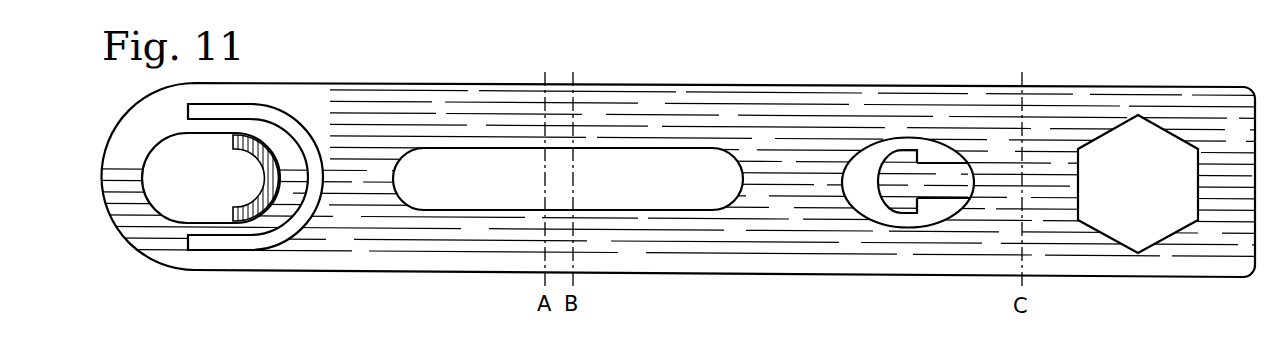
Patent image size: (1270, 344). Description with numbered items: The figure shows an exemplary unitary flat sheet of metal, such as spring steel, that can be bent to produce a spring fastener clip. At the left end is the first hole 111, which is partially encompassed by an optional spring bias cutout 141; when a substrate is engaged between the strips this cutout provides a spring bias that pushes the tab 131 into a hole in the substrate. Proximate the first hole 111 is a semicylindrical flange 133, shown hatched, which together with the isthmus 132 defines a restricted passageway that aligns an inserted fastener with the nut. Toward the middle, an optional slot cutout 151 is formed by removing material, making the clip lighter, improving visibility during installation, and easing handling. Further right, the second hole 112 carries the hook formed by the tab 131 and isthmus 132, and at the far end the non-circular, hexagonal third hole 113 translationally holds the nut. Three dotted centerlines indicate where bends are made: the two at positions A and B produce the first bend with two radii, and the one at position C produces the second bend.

The first hole 111 is at (156, 155).
The second hole 112 is at (858, 211).
The third hole 113 is at (1192, 201).
The tab 131 is at (893, 203).
The isthmus 132 is at (945, 182).
The semicylindrical flange 133 is at (262, 180).
The spring bias cutout 141 is at (300, 134).
The slot cutout 151 is at (453, 158).